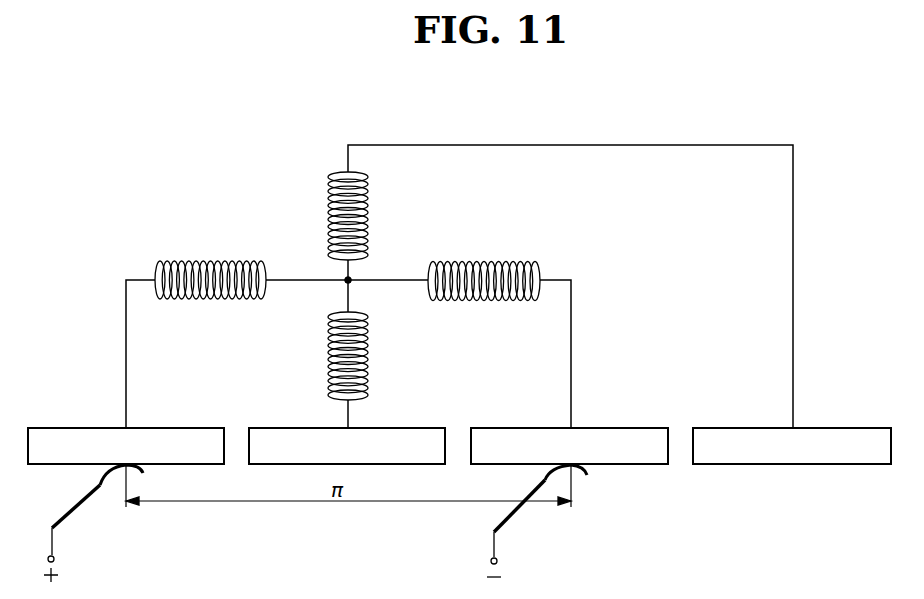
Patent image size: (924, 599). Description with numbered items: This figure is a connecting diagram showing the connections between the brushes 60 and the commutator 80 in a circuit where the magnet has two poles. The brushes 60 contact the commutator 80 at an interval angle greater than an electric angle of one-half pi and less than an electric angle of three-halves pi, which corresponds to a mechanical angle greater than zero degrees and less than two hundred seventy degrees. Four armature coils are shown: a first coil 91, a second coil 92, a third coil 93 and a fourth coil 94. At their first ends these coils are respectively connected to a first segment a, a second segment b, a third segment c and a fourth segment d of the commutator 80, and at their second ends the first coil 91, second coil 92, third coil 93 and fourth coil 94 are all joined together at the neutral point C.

The brushes 60 is at (77, 512).
The commutator 80 is at (634, 396).
The first coil 91 is at (207, 262).
The second coil 92 is at (368, 361).
The third coil 93 is at (494, 262).
The fourth coil 94 is at (369, 212).
The neutral point C is at (350, 282).